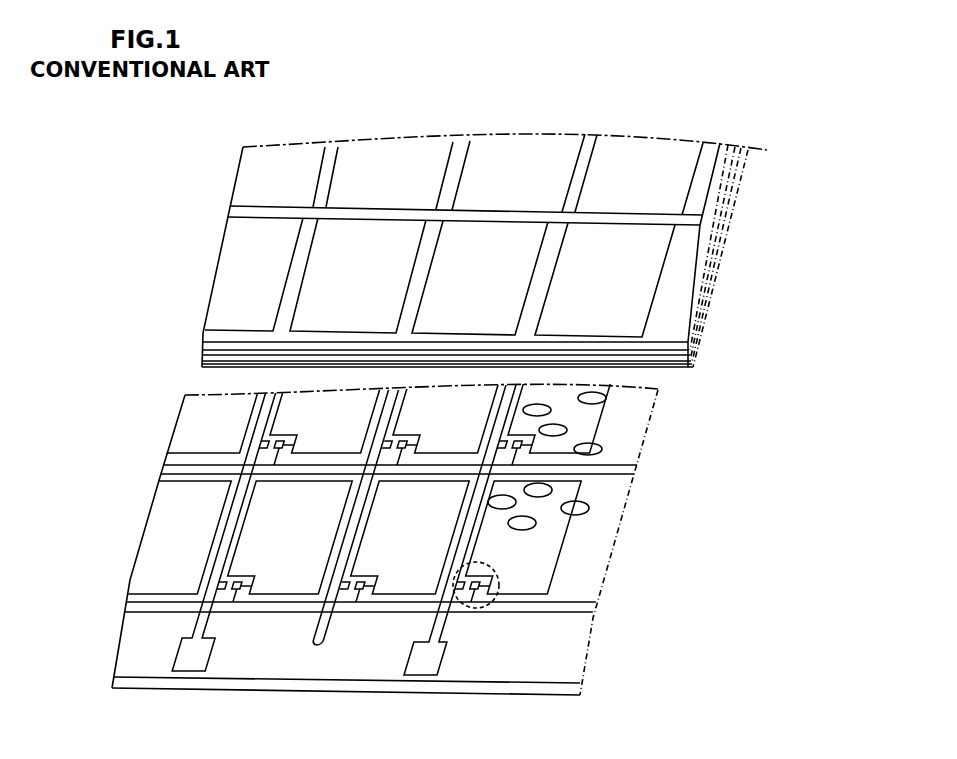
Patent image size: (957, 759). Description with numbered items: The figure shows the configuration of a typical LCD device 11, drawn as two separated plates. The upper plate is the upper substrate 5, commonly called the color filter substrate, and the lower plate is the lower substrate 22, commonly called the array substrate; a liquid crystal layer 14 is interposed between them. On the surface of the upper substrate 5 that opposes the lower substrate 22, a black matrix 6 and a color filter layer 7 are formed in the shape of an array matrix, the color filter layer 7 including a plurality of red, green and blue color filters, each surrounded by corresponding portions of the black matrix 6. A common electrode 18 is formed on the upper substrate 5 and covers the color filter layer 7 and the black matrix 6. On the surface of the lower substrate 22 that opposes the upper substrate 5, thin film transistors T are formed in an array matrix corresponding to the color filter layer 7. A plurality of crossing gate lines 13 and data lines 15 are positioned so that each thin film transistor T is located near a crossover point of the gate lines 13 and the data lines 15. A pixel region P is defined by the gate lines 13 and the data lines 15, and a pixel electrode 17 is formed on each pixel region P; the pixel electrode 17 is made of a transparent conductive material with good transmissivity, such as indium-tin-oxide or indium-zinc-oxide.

The upper substrate 5 is at (688, 353).
The black matrix 6 is at (695, 226).
The color filter layer 7 is at (665, 263).
The common electrode 18 is at (688, 367).
The LCD device 11 is at (738, 575).
The gate lines 13 is at (560, 610).
The liquid crystal layer 14 is at (593, 432).
The data lines 15 is at (423, 636).
The pixel electrode 17 is at (563, 557).
The lower substrate 22 is at (552, 687).
The pixel region P is at (593, 540).
The thin film transistor T is at (483, 607).